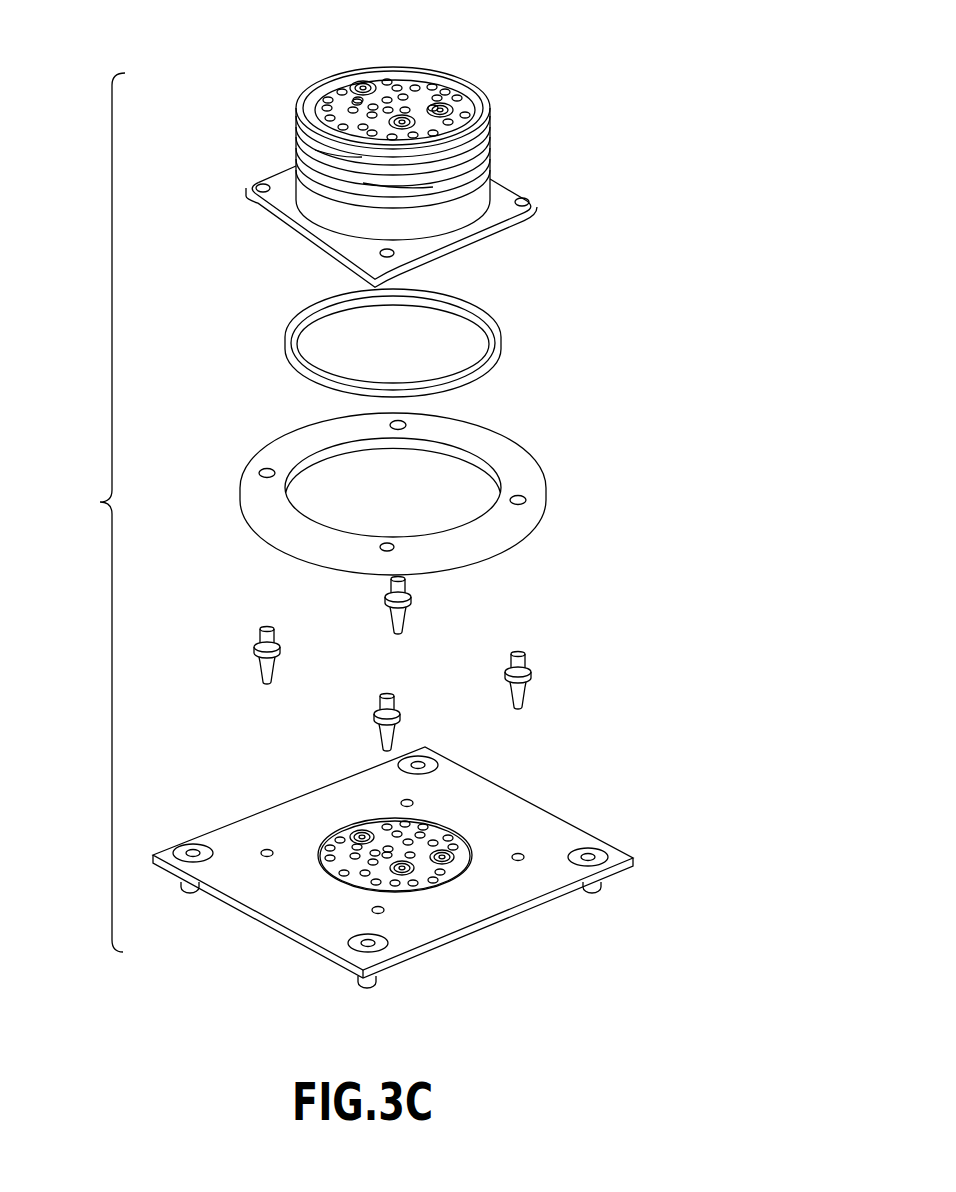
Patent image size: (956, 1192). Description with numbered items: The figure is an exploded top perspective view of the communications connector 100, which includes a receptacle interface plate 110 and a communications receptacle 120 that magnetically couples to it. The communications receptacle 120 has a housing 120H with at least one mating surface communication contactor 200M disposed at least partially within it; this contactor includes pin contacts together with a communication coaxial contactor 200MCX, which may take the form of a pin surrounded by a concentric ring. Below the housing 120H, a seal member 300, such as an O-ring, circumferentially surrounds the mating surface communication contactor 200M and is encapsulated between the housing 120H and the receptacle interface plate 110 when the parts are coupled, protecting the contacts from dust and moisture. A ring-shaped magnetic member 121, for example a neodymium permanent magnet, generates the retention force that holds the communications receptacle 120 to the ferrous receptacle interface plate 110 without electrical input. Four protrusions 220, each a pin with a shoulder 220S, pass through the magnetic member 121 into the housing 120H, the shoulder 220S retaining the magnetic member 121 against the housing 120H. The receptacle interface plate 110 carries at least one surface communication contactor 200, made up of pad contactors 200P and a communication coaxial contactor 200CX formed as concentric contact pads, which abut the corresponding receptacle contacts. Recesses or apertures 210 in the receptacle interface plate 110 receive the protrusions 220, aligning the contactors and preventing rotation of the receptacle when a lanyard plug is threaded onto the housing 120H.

The communications connector 100 is at (100, 502).
The receptacle interface plate 110 is at (585, 842).
The communications receptacle 120 is at (478, 107).
The housing 120H is at (483, 192).
The magnetic member 121 is at (542, 468).
The surface communication contactor 200 is at (440, 833).
The mating surface communication contactor 200M is at (373, 80).
The pad contactors 200P is at (417, 88).
The communication coaxial contactor 200MCX is at (443, 108).
The communication coaxial contactor 200CX is at (440, 855).
The recess or aperture 210 is at (410, 802).
The protrusion 220 is at (255, 647).
The shoulder 220S is at (528, 685).
The seal member 300 is at (493, 333).